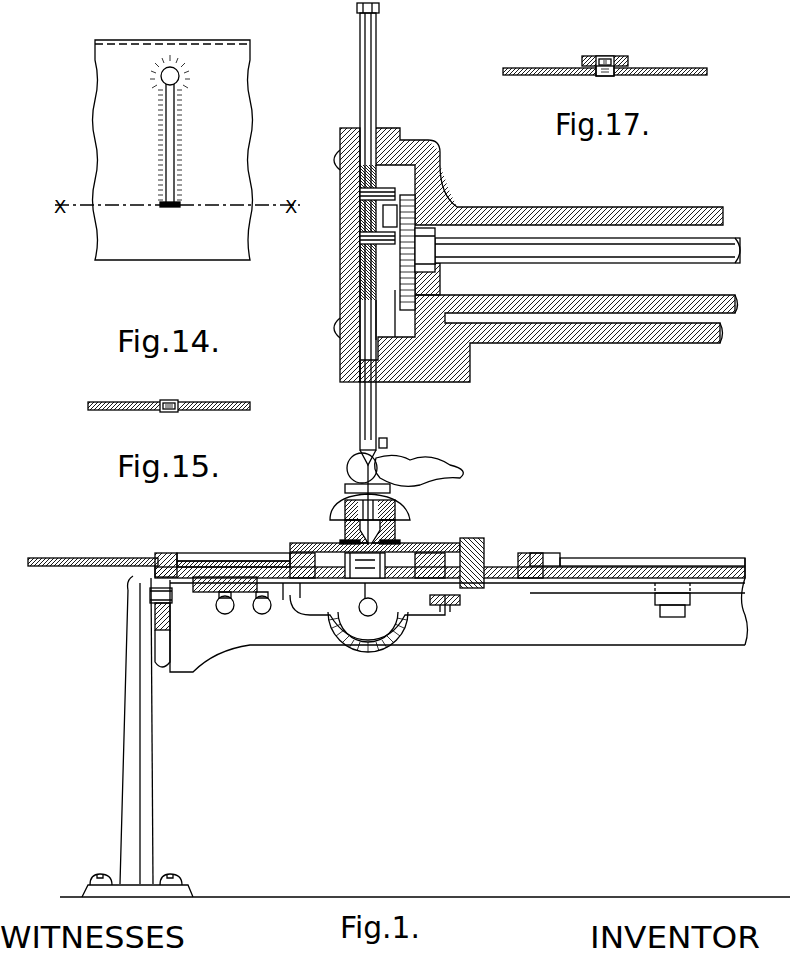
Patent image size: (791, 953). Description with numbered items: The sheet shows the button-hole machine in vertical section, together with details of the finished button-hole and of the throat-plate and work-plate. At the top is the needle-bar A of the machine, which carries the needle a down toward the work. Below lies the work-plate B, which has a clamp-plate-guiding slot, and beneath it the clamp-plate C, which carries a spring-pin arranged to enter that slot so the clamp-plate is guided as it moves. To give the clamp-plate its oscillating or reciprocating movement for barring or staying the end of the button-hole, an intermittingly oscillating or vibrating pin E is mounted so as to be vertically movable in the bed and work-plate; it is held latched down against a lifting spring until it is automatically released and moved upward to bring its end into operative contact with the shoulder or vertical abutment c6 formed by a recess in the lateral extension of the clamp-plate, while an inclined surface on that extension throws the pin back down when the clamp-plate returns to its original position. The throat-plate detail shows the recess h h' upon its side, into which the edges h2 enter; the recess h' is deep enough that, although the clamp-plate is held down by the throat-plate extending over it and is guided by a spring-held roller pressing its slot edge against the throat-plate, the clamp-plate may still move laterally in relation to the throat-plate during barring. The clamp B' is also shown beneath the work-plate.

In FIG. 1, the needle-bar A is at (360, 423).
In FIG. 1, the needle a is at (362, 482).
In FIG. 1, the edges of the throat-plate h2 is at (340, 541).
In FIG. 1, the clamp-plate C is at (432, 543).
In FIG. 1, the shoulder or abutment c6 is at (484, 543).
In FIG. 1, the intermittingly oscillating or vibrating pin E is at (486, 551).
In FIG. 1, the work-plate B is at (159, 553).
In FIG. 1, the table plate clamp B' is at (173, 625).
In FIG. 17, the recess h is at (613, 61).
In FIG. 17, the recess h' is at (585, 61).